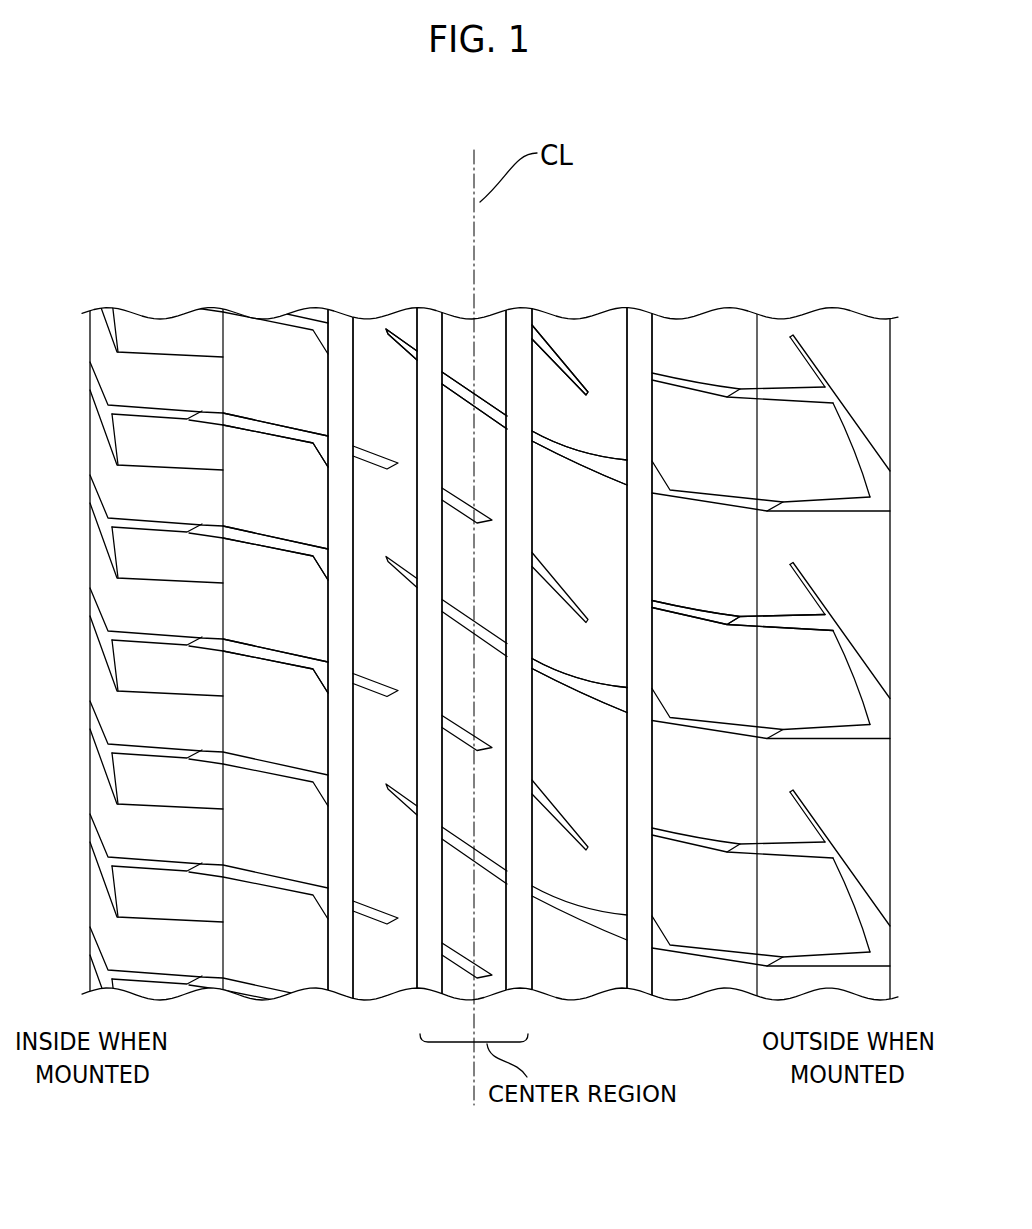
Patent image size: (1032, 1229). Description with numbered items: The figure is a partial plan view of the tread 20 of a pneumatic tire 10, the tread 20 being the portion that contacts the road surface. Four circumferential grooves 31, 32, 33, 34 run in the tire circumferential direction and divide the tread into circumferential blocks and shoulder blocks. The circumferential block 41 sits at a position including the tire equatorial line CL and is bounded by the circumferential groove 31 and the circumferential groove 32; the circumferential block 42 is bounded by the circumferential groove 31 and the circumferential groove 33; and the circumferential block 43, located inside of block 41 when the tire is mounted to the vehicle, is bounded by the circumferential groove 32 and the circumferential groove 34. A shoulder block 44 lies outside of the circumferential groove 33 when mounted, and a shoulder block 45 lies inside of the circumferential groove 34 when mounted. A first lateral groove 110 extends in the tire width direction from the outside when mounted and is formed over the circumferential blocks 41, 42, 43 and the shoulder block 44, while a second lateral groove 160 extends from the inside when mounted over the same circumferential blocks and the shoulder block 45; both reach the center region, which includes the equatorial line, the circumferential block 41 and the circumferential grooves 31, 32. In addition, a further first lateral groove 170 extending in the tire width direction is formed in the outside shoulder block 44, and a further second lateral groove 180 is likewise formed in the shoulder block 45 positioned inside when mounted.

The pneumatic tire 10 is at (889, 241).
The tread 20 is at (808, 303).
The circumferential groove 31 is at (520, 322).
The circumferential groove 32 is at (430, 322).
The circumferential groove 33 is at (638, 322).
The circumferential groove 34 is at (338, 322).
The circumferential block 41 is at (487, 322).
The circumferential block 42 is at (578, 322).
The circumferential block 43 is at (372, 322).
The shoulder block 44 is at (718, 328).
The shoulder block 45 is at (232, 322).
The first lateral groove 110 is at (606, 452).
The second lateral groove 160 is at (247, 410).
The first lateral groove 170 is at (700, 611).
The second lateral groove 180 is at (237, 533).